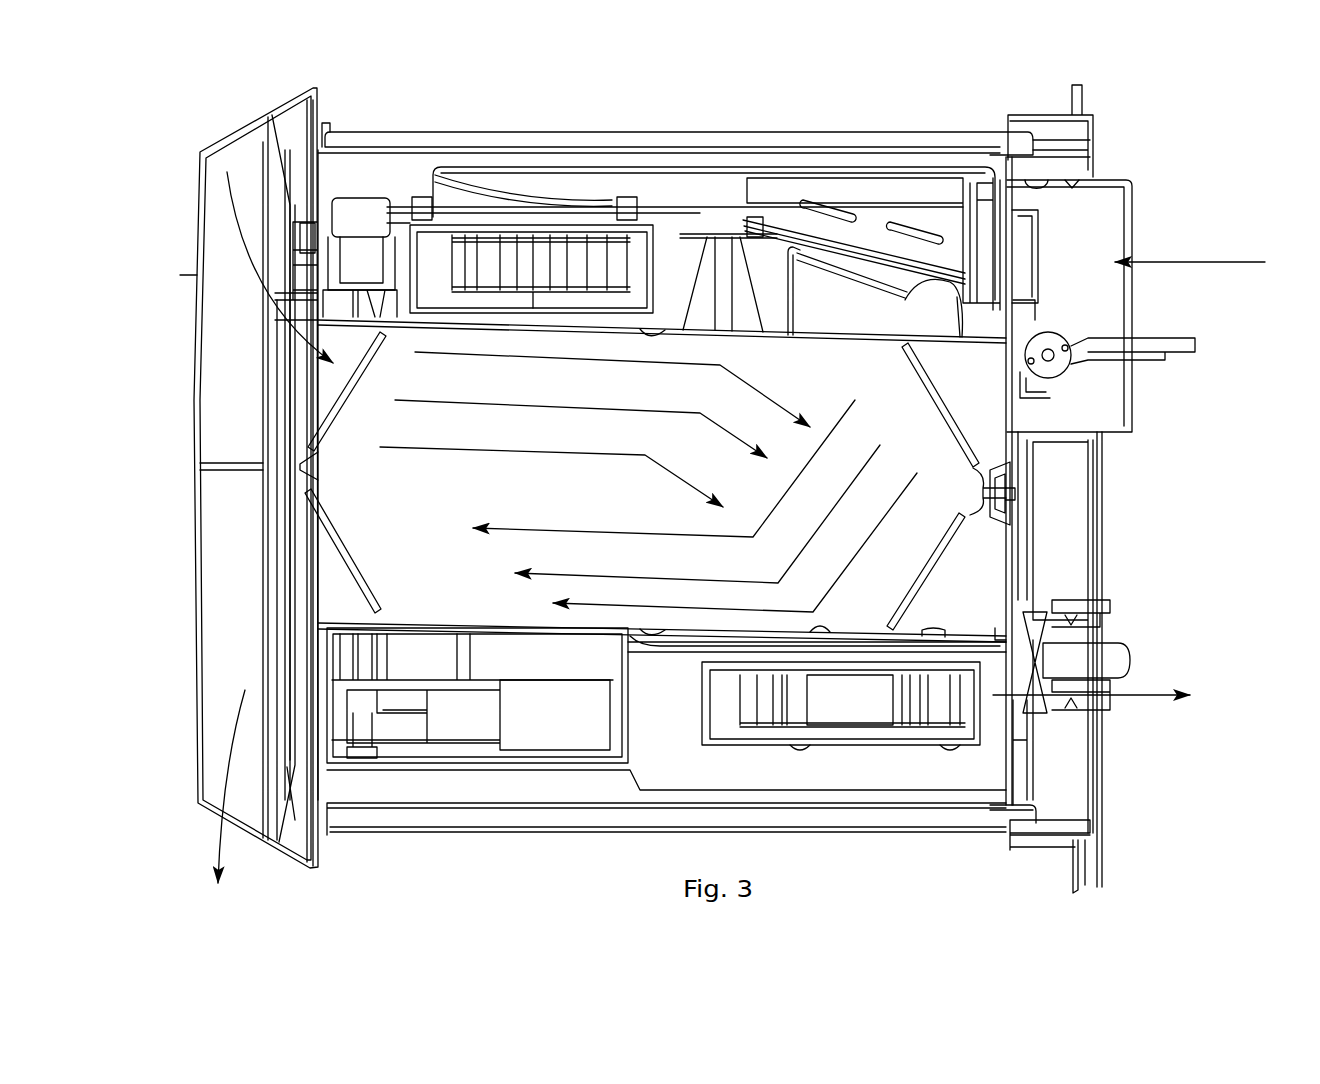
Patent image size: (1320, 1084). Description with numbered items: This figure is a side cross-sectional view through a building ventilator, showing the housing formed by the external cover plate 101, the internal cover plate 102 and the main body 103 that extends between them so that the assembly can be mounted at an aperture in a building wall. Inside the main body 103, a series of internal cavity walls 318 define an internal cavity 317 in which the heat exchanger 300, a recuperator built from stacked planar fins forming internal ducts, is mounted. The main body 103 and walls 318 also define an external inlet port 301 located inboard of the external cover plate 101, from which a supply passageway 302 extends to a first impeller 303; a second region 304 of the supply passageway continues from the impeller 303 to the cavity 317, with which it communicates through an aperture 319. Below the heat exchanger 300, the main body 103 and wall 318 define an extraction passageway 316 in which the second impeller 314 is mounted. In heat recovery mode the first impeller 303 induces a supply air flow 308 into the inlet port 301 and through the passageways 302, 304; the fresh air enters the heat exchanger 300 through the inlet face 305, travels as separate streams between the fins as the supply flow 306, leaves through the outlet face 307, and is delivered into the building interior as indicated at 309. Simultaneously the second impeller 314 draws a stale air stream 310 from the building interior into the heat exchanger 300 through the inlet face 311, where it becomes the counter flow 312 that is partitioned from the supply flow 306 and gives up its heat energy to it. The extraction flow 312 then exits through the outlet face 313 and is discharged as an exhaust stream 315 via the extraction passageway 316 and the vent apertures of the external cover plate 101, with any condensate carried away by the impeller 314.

The external cover plate 101 is at (1100, 555).
The internal cover plate 102 is at (190, 290).
The main body 103 is at (592, 134).
The heat exchanger 300 is at (978, 465).
The external inlet port 301 is at (1030, 247).
The supply passageway 302 is at (868, 225).
The first impeller 303 is at (498, 245).
The second region of supply passageway 304 is at (770, 283).
The inlet face 305 is at (928, 382).
The supply flow 306 is at (612, 530).
The outlet face 307 is at (352, 560).
The supply air flow 308 is at (1213, 262).
The fresh air supply exhausted into building interior 309 is at (213, 848).
The stale air stream 310 is at (228, 223).
The inlet face 311 is at (345, 390).
The counter flow 312 is at (748, 385).
The outlet face 313 is at (938, 572).
The second impeller 314 is at (760, 713).
The exhaust stream 315 is at (1162, 690).
The extraction passageway 316 is at (957, 715).
The internal cavity 317 is at (975, 607).
The internal cavity walls 318 is at (340, 300).
The aperture 319 is at (830, 265).